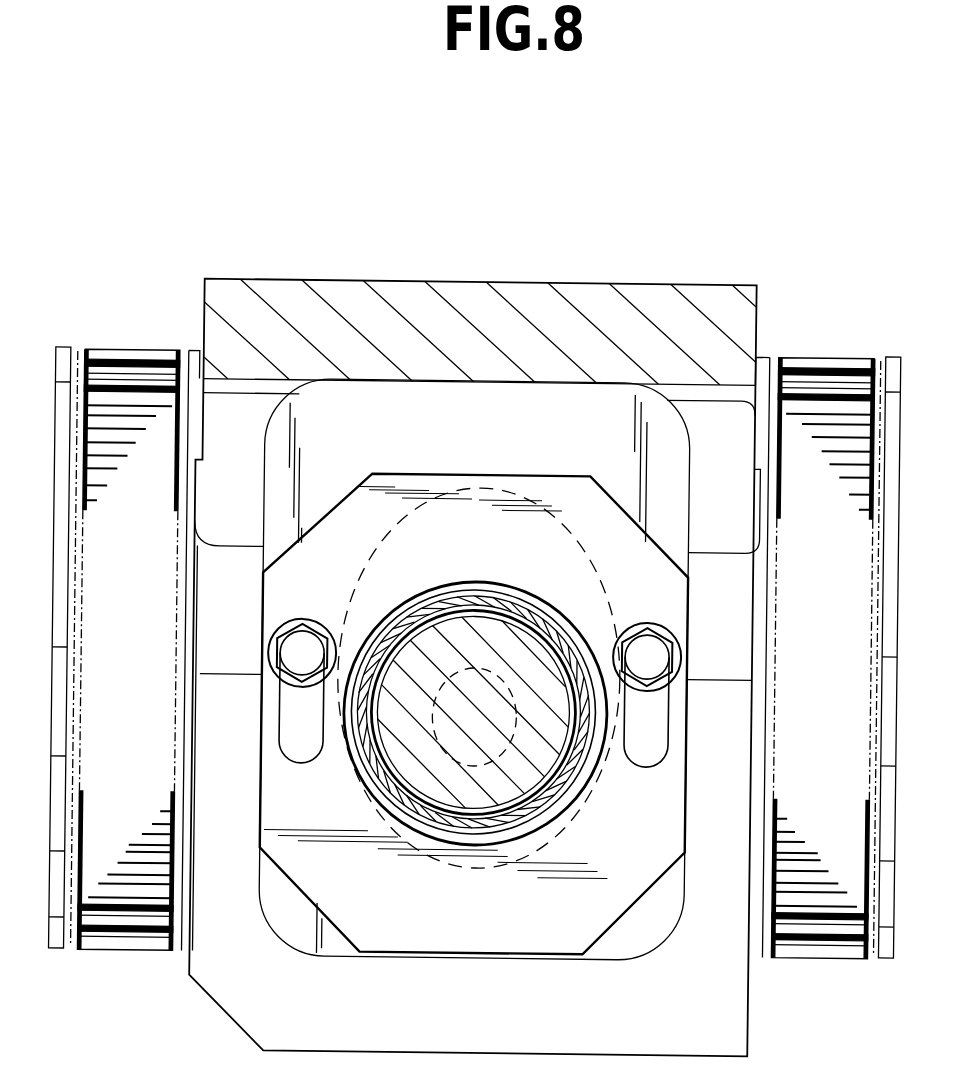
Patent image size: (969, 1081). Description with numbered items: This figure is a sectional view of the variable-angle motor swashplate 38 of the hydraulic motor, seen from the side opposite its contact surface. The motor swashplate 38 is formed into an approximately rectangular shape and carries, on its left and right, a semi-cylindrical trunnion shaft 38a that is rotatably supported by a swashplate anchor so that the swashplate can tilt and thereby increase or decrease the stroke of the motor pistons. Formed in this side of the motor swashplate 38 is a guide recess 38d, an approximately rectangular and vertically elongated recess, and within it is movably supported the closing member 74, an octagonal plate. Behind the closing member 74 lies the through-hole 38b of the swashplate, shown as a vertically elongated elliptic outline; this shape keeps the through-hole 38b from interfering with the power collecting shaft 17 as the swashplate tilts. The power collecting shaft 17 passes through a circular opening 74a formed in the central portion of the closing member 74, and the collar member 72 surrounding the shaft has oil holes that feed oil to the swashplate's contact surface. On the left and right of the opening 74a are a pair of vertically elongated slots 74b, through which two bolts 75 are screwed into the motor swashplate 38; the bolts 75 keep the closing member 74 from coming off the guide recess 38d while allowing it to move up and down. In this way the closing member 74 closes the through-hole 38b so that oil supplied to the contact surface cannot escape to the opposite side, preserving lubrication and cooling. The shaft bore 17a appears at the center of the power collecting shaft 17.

The motor swashplate 38 is at (553, 282).
The trunnion shaft 38a is at (124, 360).
The through-hole 38b is at (392, 514).
The guide recess 38d is at (392, 386).
The closing member 74 is at (505, 471).
The circular opening 74a is at (603, 667).
The slots 74b is at (305, 755).
The bolts 75 is at (302, 638).
The collar member 72 is at (558, 799).
The power collecting shaft 17 is at (480, 812).
The shaft bore 17a is at (474, 716).